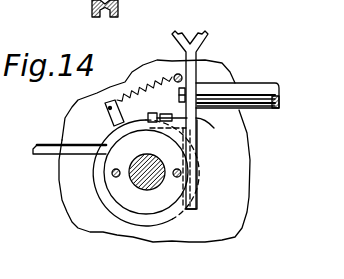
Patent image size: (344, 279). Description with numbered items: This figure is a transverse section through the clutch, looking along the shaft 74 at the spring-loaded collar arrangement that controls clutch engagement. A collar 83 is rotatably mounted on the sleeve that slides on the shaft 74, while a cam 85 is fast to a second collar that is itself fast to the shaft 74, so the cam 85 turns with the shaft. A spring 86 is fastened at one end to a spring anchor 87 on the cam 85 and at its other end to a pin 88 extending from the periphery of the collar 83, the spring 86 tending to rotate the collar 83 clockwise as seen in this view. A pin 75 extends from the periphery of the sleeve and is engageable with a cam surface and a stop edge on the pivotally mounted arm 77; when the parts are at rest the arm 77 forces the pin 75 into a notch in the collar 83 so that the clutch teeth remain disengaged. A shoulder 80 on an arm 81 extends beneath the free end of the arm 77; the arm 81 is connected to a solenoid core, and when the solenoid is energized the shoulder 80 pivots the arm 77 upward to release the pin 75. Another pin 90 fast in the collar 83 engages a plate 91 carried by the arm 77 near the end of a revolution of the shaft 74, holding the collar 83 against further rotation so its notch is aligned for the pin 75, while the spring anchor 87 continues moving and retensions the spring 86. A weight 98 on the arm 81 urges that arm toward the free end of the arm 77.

The shaft 74 is at (147, 178).
The pin 75 is at (146, 172).
The arm 77 is at (47, 156).
The shoulder 80 is at (193, 152).
The arm 81 is at (192, 150).
The collar 83 is at (100, 193).
The cam 85 is at (237, 181).
The spring 86 is at (119, 98).
The spring anchor 87 is at (177, 36).
The pin 88 is at (108, 123).
The pin 90 is at (151, 112).
The plate 91 is at (217, 129).
The weight 98 is at (256, 88).